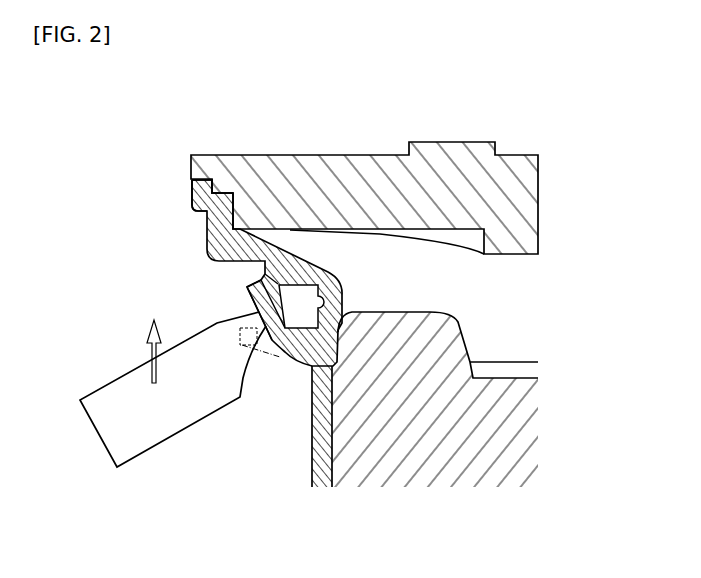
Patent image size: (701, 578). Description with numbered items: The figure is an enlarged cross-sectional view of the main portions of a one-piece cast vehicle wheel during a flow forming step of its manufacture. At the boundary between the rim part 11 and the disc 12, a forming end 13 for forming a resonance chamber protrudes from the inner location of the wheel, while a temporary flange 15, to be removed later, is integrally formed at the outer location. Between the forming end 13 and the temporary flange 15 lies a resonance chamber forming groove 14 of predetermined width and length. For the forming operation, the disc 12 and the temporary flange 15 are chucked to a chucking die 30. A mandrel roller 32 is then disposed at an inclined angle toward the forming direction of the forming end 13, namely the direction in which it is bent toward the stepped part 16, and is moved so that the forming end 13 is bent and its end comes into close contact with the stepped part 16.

The chucking die 30 is at (313, 192).
The temporary flange 15 is at (197, 199).
The forming end 13 is at (250, 312).
The stepped part 16 is at (247, 288).
The resonance chamber forming groove 14 is at (324, 303).
The rim part 11 is at (320, 434).
The disc 12 is at (478, 295).
The mandrel roller 32 is at (112, 396).